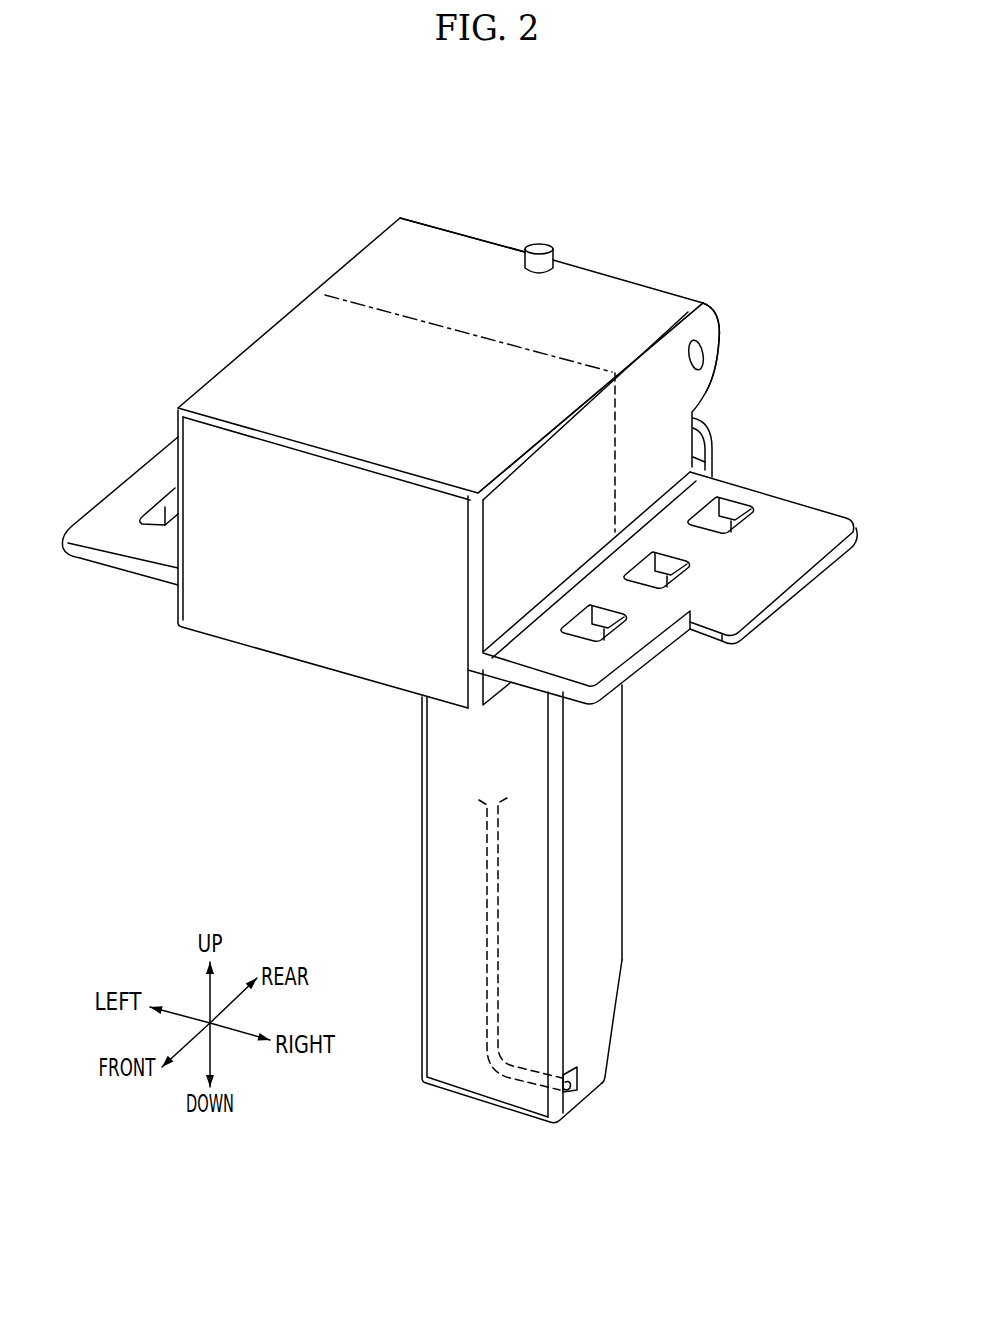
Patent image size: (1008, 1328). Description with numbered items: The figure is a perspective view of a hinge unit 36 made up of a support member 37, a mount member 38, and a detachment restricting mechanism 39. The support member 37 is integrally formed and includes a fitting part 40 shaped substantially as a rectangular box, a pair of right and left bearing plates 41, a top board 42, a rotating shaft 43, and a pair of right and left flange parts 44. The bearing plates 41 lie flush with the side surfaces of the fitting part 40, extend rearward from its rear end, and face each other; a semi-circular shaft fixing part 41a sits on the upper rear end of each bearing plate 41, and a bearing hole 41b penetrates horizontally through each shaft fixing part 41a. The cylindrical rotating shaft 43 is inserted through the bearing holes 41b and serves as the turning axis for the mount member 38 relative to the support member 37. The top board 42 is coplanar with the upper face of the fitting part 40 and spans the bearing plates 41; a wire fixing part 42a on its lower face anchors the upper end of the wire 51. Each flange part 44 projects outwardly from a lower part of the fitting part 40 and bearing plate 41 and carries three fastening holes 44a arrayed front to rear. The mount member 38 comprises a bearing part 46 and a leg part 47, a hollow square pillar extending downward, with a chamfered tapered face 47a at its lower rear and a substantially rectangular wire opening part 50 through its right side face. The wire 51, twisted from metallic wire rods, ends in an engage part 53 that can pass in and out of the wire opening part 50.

The hinge unit 36 is at (655, 148).
The support member 37 is at (772, 318).
The mount member 38 is at (729, 920).
The detachment restricting mechanism 39 is at (492, 1125).
The fitting part 40 is at (282, 334).
The bearing plate 41 is at (666, 380).
The shaft fixing part 41a is at (708, 327).
The bearing hole 41b is at (701, 350).
The top board 42 is at (593, 290).
The wire fixing part 42a is at (538, 242).
The rotating shaft 43 is at (703, 361).
The flange part 44 is at (782, 585).
The fastening hole 44a is at (624, 605).
The bearing part 46 is at (713, 455).
The leg part 47 is at (623, 863).
The tapered face 47a is at (616, 1007).
The wire opening part 50 is at (579, 1085).
The wire 51 is at (523, 1088).
The engage part 53 is at (574, 1092).